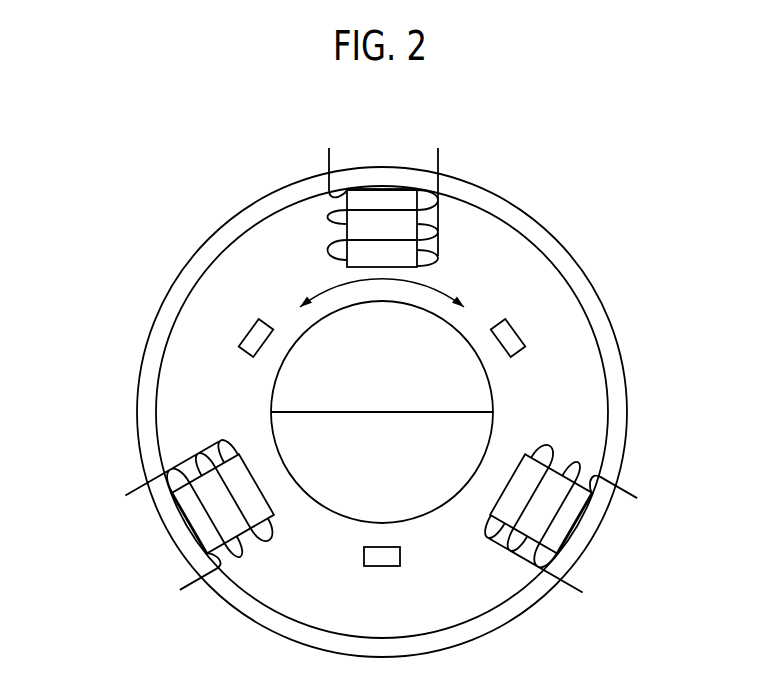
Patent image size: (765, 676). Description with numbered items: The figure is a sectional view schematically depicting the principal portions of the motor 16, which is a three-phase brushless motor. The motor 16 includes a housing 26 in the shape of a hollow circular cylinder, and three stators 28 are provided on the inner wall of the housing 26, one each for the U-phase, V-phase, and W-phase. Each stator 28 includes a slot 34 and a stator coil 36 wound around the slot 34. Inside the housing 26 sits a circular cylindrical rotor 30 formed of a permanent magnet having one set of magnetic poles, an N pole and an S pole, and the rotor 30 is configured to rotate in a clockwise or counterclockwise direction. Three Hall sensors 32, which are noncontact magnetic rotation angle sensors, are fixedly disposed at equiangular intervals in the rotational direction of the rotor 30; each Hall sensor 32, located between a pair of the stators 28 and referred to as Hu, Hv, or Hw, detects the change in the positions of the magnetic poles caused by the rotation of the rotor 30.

The motor 16 is at (169, 133).
The housing 26 is at (607, 337).
The stator 28 is at (382, 340).
The rotor 30 is at (333, 497).
The Hall sensor 32 is at (247, 337).
The slot 34 is at (390, 196).
The stator coil 36 is at (442, 225).